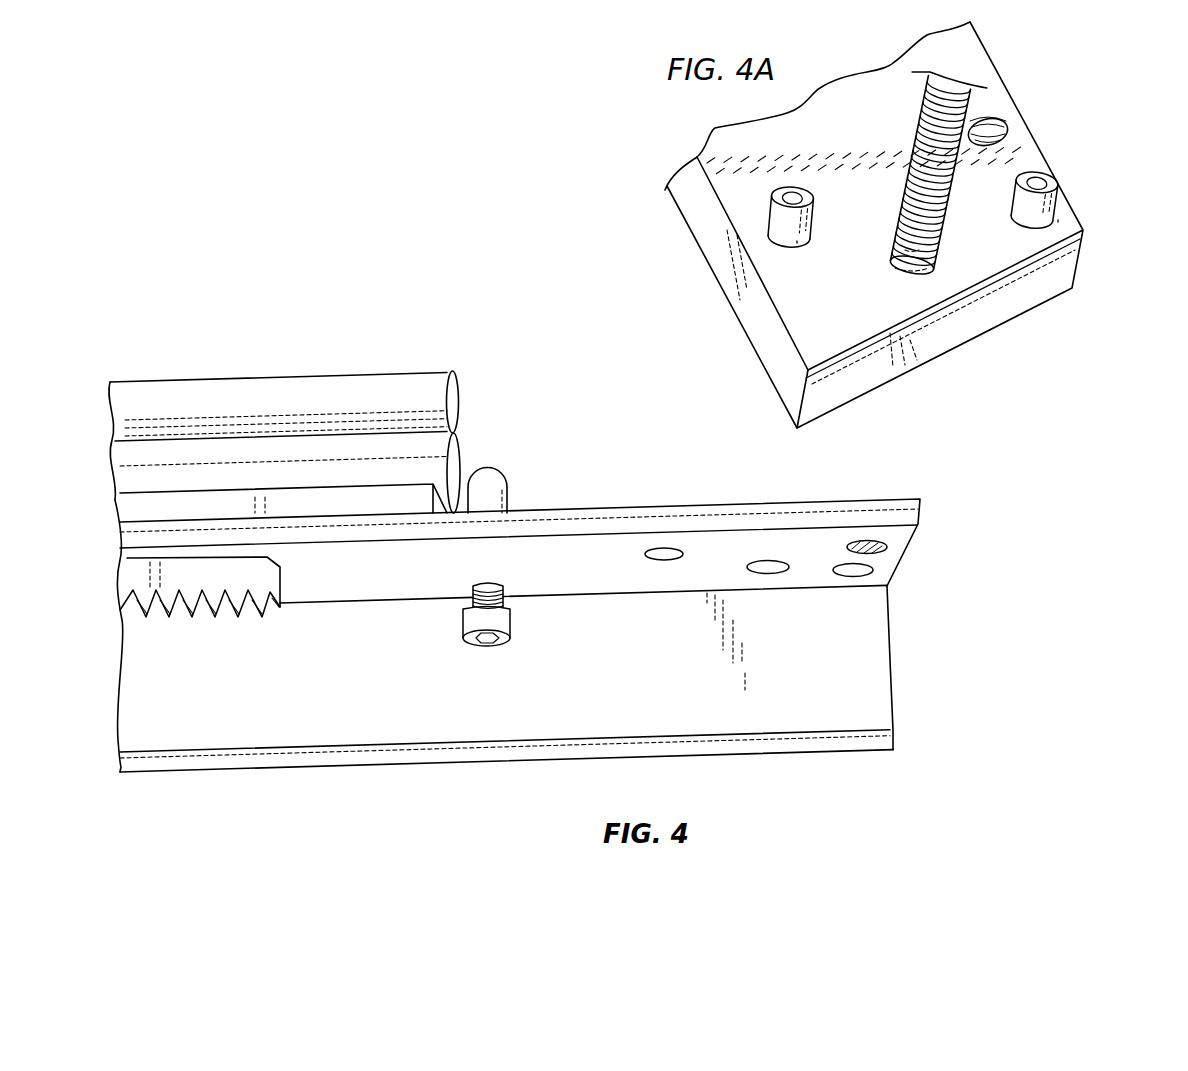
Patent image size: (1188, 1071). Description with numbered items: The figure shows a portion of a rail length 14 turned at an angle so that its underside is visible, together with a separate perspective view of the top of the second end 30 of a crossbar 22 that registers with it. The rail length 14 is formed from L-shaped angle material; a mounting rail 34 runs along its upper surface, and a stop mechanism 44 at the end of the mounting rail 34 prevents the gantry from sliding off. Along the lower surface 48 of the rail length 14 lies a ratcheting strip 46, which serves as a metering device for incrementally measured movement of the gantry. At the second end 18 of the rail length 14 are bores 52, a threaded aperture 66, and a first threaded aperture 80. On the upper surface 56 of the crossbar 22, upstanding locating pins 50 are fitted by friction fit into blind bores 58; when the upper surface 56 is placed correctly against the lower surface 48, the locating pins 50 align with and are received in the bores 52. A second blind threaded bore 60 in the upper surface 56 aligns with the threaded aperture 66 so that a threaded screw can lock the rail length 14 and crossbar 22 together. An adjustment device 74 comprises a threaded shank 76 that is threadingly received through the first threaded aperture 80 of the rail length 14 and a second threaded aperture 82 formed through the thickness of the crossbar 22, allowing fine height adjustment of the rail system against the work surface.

In FIG. 4, the rail length 14 is at (567, 518).
In FIG. 4, the second end 18 is at (893, 660).
In FIG. 4A, the crossbar 22 is at (700, 205).
In FIG. 4A, the second end 30 is at (1080, 268).
In FIG. 4, the mounting rail 34 is at (348, 450).
In FIG. 4, the stop mechanism 44 is at (490, 490).
In FIG. 4, the ratcheting strip 46 is at (234, 578).
In FIG. 4, the lower surface 48 is at (377, 570).
In FIG. 4A, the locating pin 50 is at (777, 222).
In FIG. 4, the bore 52 is at (663, 553).
In FIG. 4A, the upper surface 56 is at (838, 144).
In FIG. 4A, the blind bore 58 is at (797, 243).
In FIG. 4A, the second blind threaded bore 60 is at (1007, 128).
In FIG. 4, the threaded aperture 66 is at (887, 546).
In FIG. 4A, the adjustment device 74 is at (893, 248).
In FIG. 4A, the threaded shank 76 is at (937, 270).
In FIG. 4, the first threaded aperture 80 is at (771, 565).
In FIG. 4A, the second threaded aperture 82 is at (917, 252).